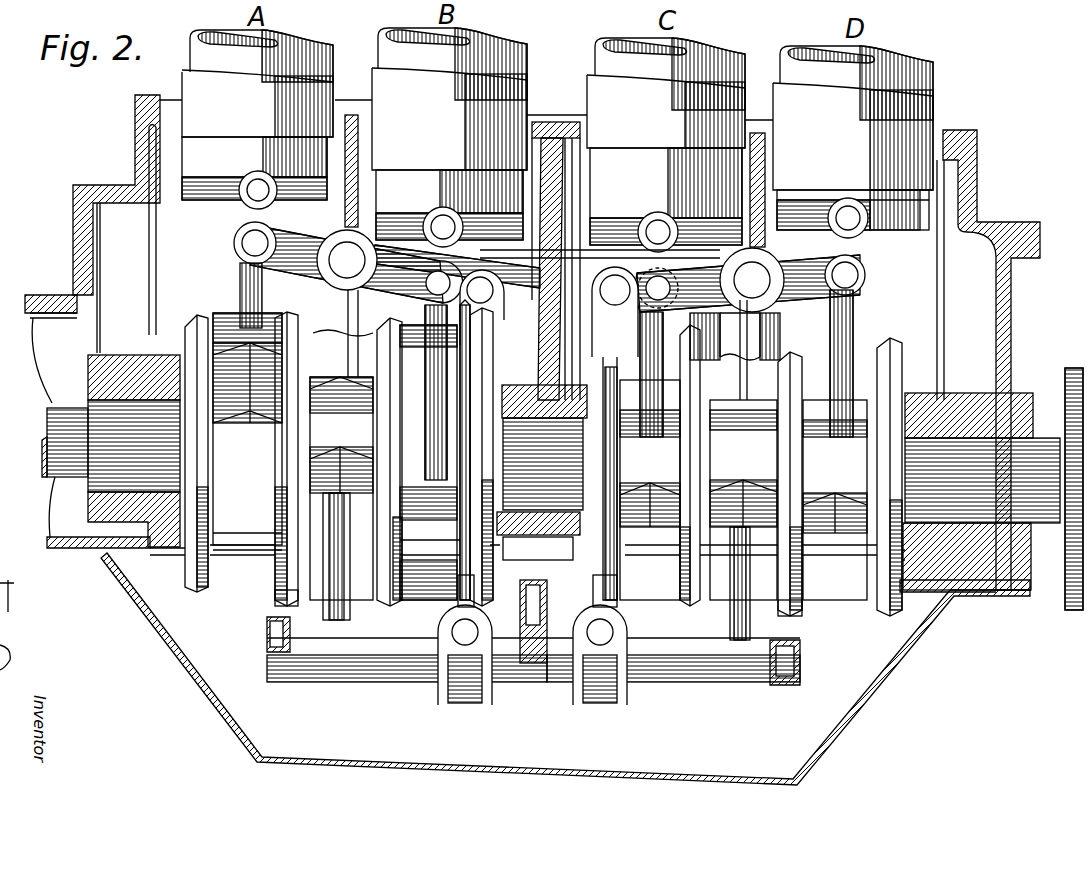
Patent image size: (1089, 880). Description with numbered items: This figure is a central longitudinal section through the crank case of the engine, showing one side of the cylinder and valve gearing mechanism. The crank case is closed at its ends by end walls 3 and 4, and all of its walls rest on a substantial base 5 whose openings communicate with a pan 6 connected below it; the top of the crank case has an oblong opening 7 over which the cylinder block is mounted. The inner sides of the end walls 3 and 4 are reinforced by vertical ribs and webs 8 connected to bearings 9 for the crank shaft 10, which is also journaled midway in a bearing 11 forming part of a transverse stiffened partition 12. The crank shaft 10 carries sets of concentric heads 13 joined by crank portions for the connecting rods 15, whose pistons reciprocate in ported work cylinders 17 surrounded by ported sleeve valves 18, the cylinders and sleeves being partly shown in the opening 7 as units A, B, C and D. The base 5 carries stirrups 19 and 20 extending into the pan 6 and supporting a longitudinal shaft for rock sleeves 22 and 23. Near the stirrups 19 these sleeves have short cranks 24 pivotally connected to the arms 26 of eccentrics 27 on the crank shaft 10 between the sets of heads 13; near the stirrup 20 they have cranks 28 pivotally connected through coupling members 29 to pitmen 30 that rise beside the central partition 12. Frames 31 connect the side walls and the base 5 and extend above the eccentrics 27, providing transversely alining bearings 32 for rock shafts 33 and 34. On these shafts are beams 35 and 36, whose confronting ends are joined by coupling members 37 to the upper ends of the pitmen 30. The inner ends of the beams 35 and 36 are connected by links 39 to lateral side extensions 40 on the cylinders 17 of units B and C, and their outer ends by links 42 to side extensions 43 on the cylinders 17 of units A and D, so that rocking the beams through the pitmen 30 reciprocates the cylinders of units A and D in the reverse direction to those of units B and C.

The end wall 3 is at (74, 252).
The end wall 4 is at (1012, 347).
The base 5 is at (245, 556).
The pan 6 is at (822, 748).
The oblong opening 7 is at (163, 100).
The vertical ribs and webs 8 is at (540, 263).
The bearings 9 is at (155, 362).
The crank shaft 10 is at (47, 436).
The bearing 11 is at (556, 546).
The transverse partition 12 is at (574, 176).
The concentric heads 13 is at (268, 502).
The connecting rods 15 is at (240, 300).
The work cylinders 17 is at (318, 48).
The sleeve valves 18 is at (333, 92).
The stirrups 19 is at (272, 632).
The stirrup 20 is at (537, 665).
The rock sleeve 22 is at (388, 688).
The rock sleeve 23 is at (668, 690).
The short cranks 24 is at (333, 613).
The arms 26 is at (282, 560).
The eccentrics 27 is at (540, 456).
The cranks 28 is at (466, 700).
The coupling members 29 is at (450, 650).
The pitmen 30 is at (440, 600).
The frames 31 is at (337, 300).
The bearings 32 is at (615, 312).
The rock shaft 33 is at (356, 265).
The rock shaft 34 is at (748, 280).
The beam 35 is at (240, 284).
The beam 36 is at (705, 235).
The coupling members 37 is at (494, 300).
The links 39 is at (545, 262).
The lateral side extensions 40 is at (420, 222).
The links 42 is at (240, 246).
The side extensions 43 is at (200, 186).